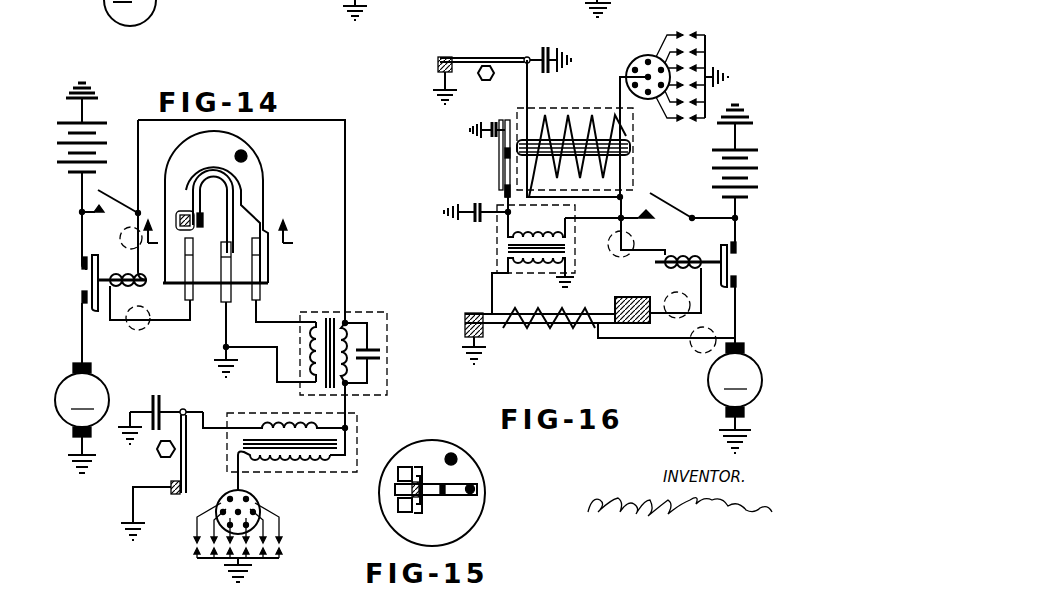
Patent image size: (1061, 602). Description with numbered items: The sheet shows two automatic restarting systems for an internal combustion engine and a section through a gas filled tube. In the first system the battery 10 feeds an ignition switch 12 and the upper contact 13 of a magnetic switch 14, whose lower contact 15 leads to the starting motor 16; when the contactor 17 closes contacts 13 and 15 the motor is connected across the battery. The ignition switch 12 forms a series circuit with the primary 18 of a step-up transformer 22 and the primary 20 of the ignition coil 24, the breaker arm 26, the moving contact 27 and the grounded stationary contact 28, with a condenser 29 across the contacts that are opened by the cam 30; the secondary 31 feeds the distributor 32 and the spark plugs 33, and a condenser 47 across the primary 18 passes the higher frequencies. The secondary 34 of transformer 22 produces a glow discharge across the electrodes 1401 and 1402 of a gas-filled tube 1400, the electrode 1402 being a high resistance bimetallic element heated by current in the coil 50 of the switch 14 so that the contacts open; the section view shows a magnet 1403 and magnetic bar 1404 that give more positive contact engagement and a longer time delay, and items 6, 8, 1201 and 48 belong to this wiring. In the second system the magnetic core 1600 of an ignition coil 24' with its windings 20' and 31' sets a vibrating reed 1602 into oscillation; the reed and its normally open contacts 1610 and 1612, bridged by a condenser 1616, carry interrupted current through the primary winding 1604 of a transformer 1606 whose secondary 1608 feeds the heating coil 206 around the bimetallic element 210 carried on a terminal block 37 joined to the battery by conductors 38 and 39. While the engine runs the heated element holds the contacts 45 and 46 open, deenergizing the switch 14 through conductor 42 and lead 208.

In FIG. 16, the section 6 is at (698, 352).
In FIG. 14, the section 8 is at (130, 227).
In FIG. 16, the section 8 is at (677, 300).
In FIG. 14, the battery 10 is at (106, 133).
In FIG. 16, the battery 10 is at (757, 162).
In FIG. 14, the ignition switch 12 is at (120, 208).
In FIG. 16, the ignition switch 12 is at (661, 208).
In FIG. 14, the upper contact 13 is at (78, 266).
In FIG. 16, the upper contact 13 is at (741, 254).
In FIG. 14, the magnetic switch 14 is at (74, 282).
In FIG. 16, the magnetic switch 14 is at (742, 262).
In FIG. 14, the lower contact 15 is at (176, 291).
In FIG. 16, the lower contact 15 is at (745, 309).
In FIG. 14, the starting motor 16 is at (82, 418).
In FIG. 16, the starting motor 16 is at (735, 398).
In FIG. 14, the contactor 17 is at (95, 312).
In FIG. 16, the contactor 17 is at (723, 288).
In FIG. 14, the primary 18 is at (350, 327).
In FIG. 14, the primary 20 is at (274, 413).
In FIG. 16, the primary winding 20' is at (645, 135).
In FIG. 14, the step-up transformer 22 is at (318, 305).
In FIG. 14, the ignition coil 24 is at (287, 432).
In FIG. 16, the ignition coil 24' is at (575, 141).
In FIG. 14, the breaker arm 26 is at (187, 458).
In FIG. 16, the breaker arm 26 is at (494, 60).
In FIG. 14, the moving contact 27 is at (178, 496).
In FIG. 16, the moving contact 27 is at (440, 60).
In FIG. 14, the grounded stationary contact 28 is at (171, 492).
In FIG. 16, the grounded stationary contact 28 is at (440, 74).
In FIG. 14, the condenser 29 is at (156, 396).
In FIG. 16, the condenser 29 is at (551, 54).
In FIG. 14, the cam 30 is at (158, 452).
In FIG. 16, the cam 30 is at (480, 75).
In FIG. 14, the secondary 31 is at (284, 473).
In FIG. 16, the secondary winding 31' is at (576, 130).
In FIG. 14, the distributor 32 is at (253, 506).
In FIG. 16, the distributor 32 is at (638, 61).
In FIG. 14, the spark plugs 33 is at (308, 576).
In FIG. 16, the spark plugs 33 is at (692, 31).
In FIG. 14, the secondary 34 is at (310, 340).
In FIG. 16, the stationary terminal block 37 is at (627, 290).
In FIG. 14, the conductor 38 is at (148, 266).
In FIG. 16, the conductor 38 is at (639, 264).
In FIG. 14, the conductor 39 is at (82, 214).
In FIG. 16, the conductor 39 is at (703, 210).
In FIG. 14, the conductor 42 is at (82, 350).
In FIG. 16, the conductor 42 is at (735, 312).
In FIG. 16, the contact 45 is at (486, 341).
In FIG. 16, the contact 46 is at (486, 334).
In FIG. 14, the condenser 47 is at (382, 350).
In FIG. 14, the lead 48 is at (138, 168).
In FIG. 16, the lead 48 is at (604, 220).
In FIG. 14, the coil 50 is at (129, 276).
In FIG. 16, the coil 50 is at (688, 257).
In FIG. 16, the heating coil 206 is at (527, 330).
In FIG. 16, the lead 208 is at (631, 338).
In FIG. 16, the bimetallic element 210 is at (597, 315).
In FIG. 14, the junction 1201 is at (134, 333).
In FIG. 16, the junction 1201 is at (632, 231).
In FIG. 14, the gas-filled tube 1400 is at (266, 170).
In FIG. 15, the gas-filled tube 1400 is at (402, 444).
In FIG. 14, the electrode 1401 is at (244, 203).
In FIG. 15, the electrode 1401 is at (472, 484).
In FIG. 14, the bimetallic element 1402 is at (207, 172).
In FIG. 15, the bimetallic element 1402 is at (446, 492).
In FIG. 14, the magnet 1403 is at (181, 214).
In FIG. 15, the magnet 1403 is at (403, 513).
In FIG. 14, the magnetic bar 1404 is at (207, 229).
In FIG. 15, the magnetic bar 1404 is at (434, 458).
In FIG. 16, the magnetic core 1600 is at (632, 150).
In FIG. 16, the vibrating reed 1602 is at (500, 167).
In FIG. 16, the primary winding 1604 is at (536, 222).
In FIG. 16, the transformer 1606 is at (496, 249).
In FIG. 16, the secondary 1608 is at (532, 272).
In FIG. 16, the contact 1610 is at (492, 122).
In FIG. 16, the contact 1612 is at (501, 120).
In FIG. 16, the condenser 1616 is at (472, 200).